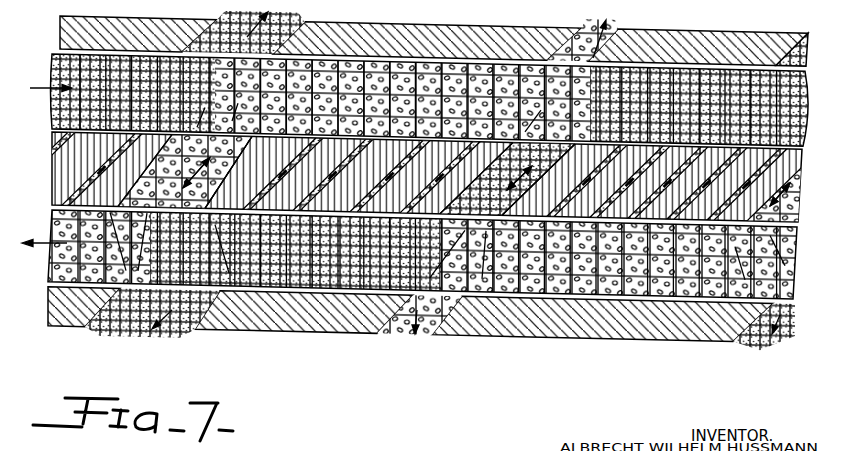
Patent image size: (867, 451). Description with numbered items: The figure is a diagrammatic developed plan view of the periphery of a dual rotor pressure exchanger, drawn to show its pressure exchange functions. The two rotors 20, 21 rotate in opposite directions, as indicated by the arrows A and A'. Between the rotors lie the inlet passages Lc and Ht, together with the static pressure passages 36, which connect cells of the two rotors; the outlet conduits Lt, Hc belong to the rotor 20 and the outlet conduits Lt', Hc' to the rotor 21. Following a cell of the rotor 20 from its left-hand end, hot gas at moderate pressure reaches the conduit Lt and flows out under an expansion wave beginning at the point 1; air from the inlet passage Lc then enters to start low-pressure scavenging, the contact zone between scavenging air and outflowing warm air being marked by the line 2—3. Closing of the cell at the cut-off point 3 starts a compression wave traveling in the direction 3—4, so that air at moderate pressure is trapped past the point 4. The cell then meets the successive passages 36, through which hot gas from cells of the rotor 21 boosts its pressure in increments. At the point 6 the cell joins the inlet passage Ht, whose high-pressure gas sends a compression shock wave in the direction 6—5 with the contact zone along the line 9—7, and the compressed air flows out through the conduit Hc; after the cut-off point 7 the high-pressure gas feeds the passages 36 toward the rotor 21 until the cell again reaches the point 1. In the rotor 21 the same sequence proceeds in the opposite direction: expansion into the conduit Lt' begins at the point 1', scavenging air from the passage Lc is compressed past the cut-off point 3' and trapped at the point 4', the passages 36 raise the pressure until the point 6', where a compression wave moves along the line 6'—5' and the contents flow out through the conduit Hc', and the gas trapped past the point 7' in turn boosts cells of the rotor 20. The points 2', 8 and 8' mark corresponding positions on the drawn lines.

The expansion start point 1 is at (138, 34).
The expansion start point 1' is at (134, 307).
The contact line end point 2 is at (479, 178).
The contact line end point 2' is at (224, 172).
The cut-off point 3 is at (243, 33).
The cut-off point 3' is at (440, 320).
The cut-off point 4 is at (484, 178).
The cut-off or trapping point 4' is at (144, 171).
The compression wave end point 5 is at (427, 42).
The compression wave end point 5' is at (602, 319).
The high-pressure inlet point 6 is at (507, 179).
The high-pressure inlet point 6' is at (526, 179).
The cut-off point 7 is at (696, 47).
The cut-off point 7' is at (308, 312).
The hot bonding zone boundary line 8 is at (538, 179).
The hot bonding zone boundary line (lower) 8' is at (476, 178).
The contact line end point 9 is at (540, 119).
The rotor 20 is at (800, 97).
The rotor 21 is at (793, 241).
The static pressure passages 36 is at (58, 155).
The arrow A is at (51, 71).
The arrow A' is at (44, 225).
The outlet conduit Lt is at (535, 23).
The outlet conduit Lt' is at (426, 335).
The outlet conduit Hc is at (601, 36).
The outlet conduit Hc' is at (419, 327).
The inlet passage Lc is at (806, 203).
The inlet passage Ht is at (511, 177).